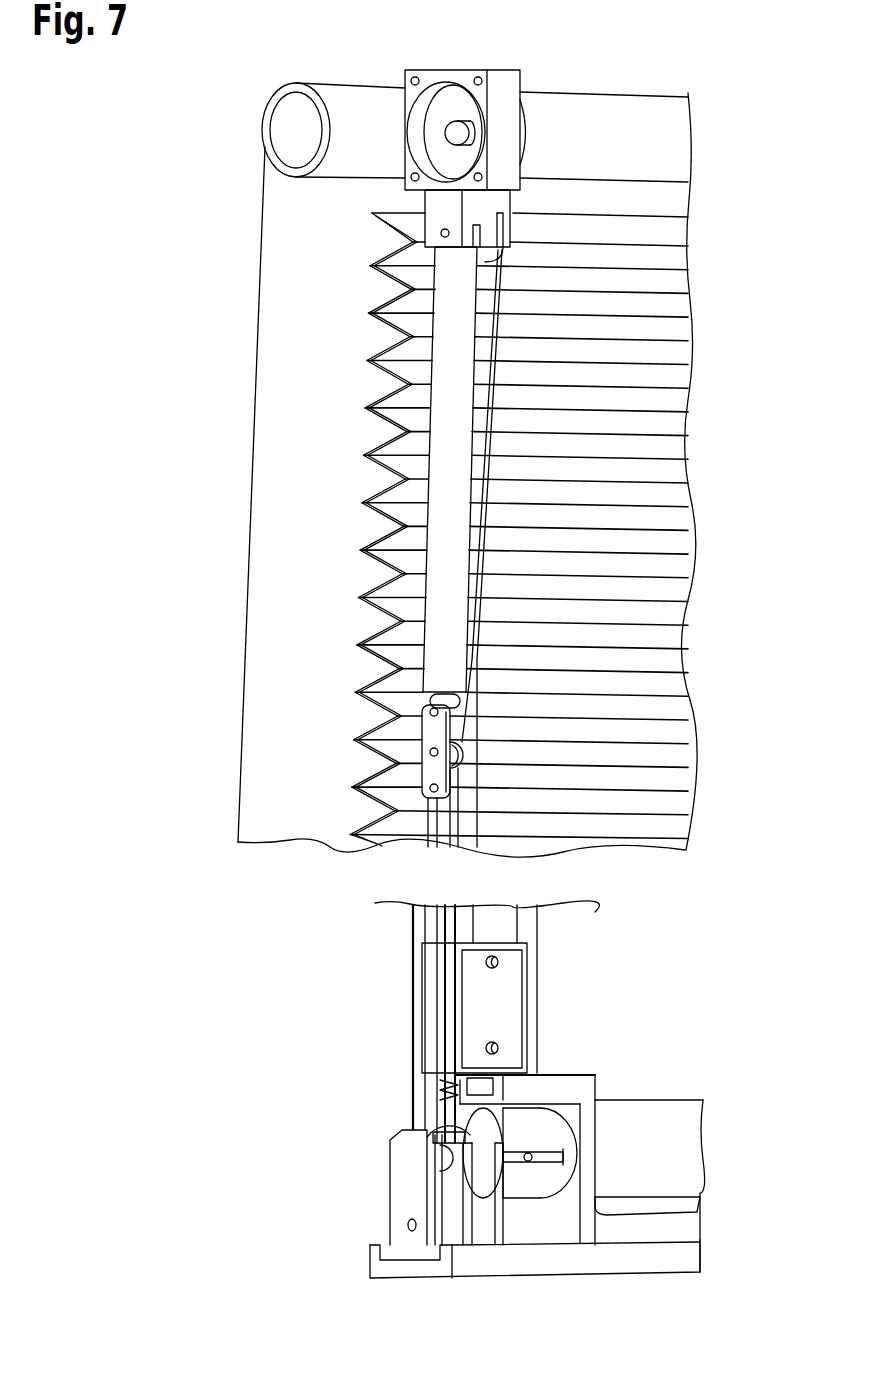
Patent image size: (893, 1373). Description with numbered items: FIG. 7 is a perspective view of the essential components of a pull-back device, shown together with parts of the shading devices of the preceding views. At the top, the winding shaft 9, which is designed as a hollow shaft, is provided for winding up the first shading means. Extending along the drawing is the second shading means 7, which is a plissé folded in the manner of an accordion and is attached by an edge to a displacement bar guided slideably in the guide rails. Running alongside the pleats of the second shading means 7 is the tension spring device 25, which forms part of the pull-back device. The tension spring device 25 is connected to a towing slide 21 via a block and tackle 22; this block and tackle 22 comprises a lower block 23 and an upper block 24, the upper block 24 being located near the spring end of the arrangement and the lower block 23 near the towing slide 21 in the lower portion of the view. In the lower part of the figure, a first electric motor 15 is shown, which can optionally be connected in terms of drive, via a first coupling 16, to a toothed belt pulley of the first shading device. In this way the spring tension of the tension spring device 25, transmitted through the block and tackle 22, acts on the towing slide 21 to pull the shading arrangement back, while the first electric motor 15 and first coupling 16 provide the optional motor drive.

The second shading means 7 is at (655, 520).
The winding shaft 9 is at (266, 118).
The tension spring device 25 is at (458, 427).
The upper block 24 is at (437, 760).
The block and tackle 22 is at (413, 927).
The towing slide 21 is at (433, 1025).
The first electric motor 15 is at (665, 1140).
The lower block 23 is at (420, 1203).
The first coupling 16 is at (535, 1175).